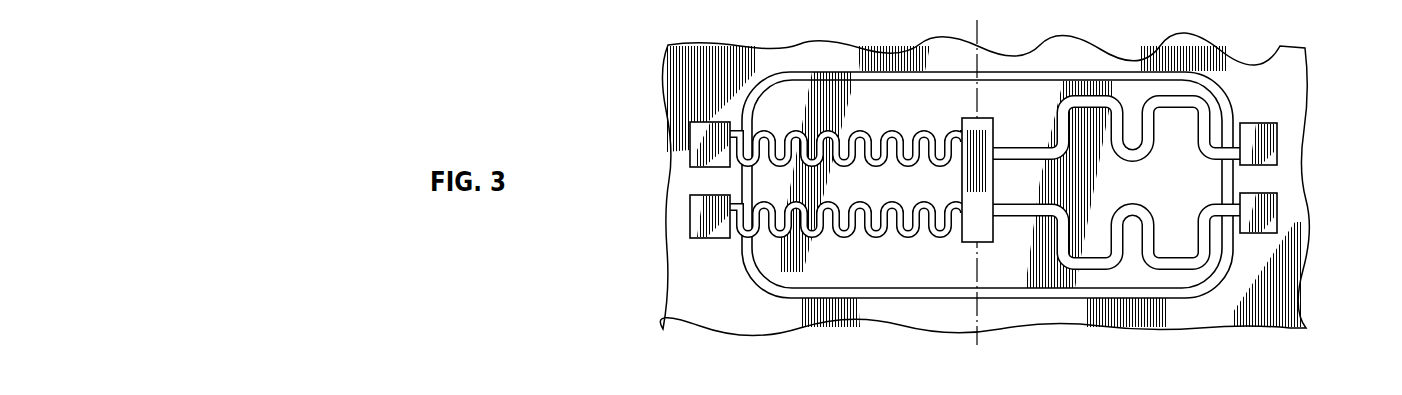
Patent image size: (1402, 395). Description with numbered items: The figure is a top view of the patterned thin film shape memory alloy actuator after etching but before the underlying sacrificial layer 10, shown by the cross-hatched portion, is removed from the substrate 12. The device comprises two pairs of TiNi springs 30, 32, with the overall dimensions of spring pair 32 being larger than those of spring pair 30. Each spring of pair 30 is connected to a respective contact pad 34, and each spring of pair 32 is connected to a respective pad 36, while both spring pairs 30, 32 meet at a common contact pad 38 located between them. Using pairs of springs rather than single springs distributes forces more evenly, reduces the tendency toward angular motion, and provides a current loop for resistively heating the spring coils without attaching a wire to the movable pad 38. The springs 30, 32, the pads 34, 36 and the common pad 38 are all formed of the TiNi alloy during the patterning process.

The sacrificial layer 10 is at (745, 258).
The substrate 12 is at (676, 96).
The TiNi spring pair 30 is at (876, 202).
The TiNi spring pair 32 is at (1140, 160).
The contact pads 34 is at (690, 155).
The pads 36 is at (1273, 154).
The common contact pad 38 is at (993, 129).